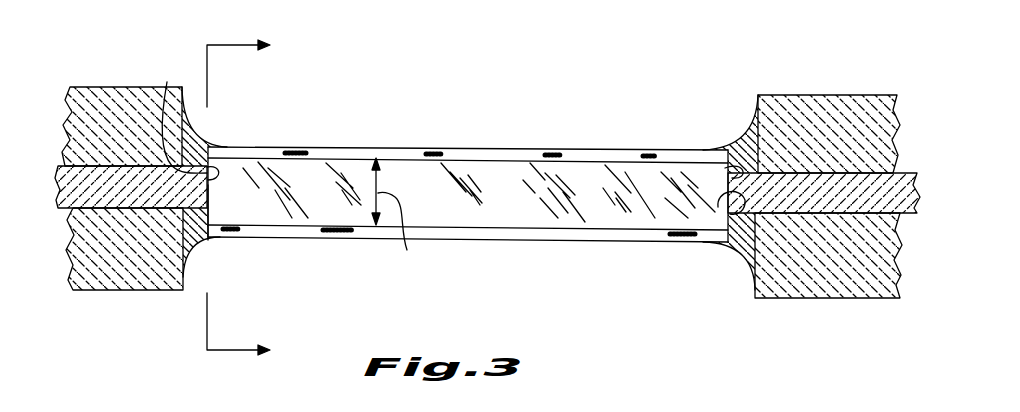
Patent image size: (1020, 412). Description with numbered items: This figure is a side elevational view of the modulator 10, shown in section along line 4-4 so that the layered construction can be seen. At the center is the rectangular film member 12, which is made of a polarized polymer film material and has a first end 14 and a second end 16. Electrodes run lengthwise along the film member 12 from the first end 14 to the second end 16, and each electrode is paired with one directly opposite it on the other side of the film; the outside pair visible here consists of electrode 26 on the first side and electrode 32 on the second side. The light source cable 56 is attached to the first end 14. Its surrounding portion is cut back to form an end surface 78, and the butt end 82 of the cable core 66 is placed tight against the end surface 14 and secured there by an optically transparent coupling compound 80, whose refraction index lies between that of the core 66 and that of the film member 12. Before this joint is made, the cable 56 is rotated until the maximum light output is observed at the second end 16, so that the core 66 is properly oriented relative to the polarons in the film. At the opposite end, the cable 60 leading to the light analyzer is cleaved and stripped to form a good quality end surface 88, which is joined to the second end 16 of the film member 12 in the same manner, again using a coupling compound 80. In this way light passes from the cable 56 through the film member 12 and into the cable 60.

The section line 4- 4 is at (254, 198).
The modulator 10 is at (476, 220).
The film member 12 is at (622, 217).
The first end 14 is at (208, 188).
The second end 16 is at (725, 170).
The electrode 26 is at (494, 146).
The electrode 32 is at (463, 242).
The light source cable 56 is at (128, 87).
The cable 60 is at (829, 95).
The cable core 66 is at (113, 192).
The end surface 78 is at (195, 260).
The coupling compound 80 is at (203, 134).
The butt end 82 is at (185, 117).
The end surface 88 is at (729, 265).